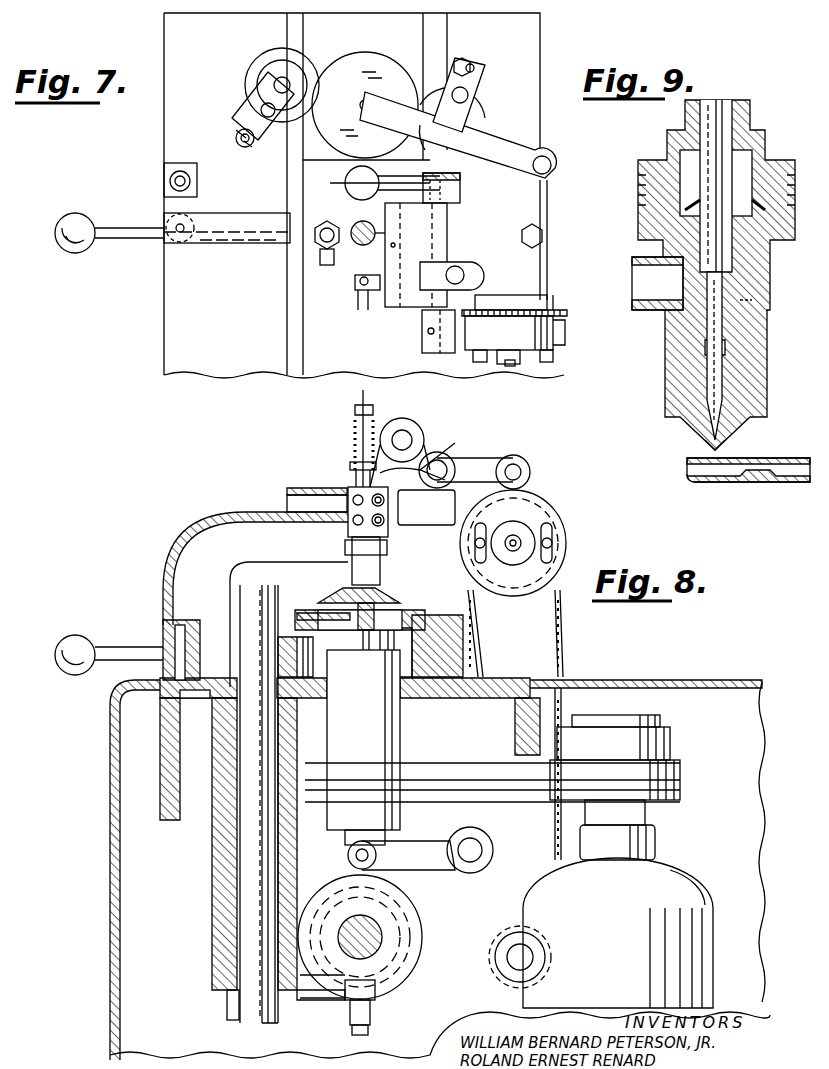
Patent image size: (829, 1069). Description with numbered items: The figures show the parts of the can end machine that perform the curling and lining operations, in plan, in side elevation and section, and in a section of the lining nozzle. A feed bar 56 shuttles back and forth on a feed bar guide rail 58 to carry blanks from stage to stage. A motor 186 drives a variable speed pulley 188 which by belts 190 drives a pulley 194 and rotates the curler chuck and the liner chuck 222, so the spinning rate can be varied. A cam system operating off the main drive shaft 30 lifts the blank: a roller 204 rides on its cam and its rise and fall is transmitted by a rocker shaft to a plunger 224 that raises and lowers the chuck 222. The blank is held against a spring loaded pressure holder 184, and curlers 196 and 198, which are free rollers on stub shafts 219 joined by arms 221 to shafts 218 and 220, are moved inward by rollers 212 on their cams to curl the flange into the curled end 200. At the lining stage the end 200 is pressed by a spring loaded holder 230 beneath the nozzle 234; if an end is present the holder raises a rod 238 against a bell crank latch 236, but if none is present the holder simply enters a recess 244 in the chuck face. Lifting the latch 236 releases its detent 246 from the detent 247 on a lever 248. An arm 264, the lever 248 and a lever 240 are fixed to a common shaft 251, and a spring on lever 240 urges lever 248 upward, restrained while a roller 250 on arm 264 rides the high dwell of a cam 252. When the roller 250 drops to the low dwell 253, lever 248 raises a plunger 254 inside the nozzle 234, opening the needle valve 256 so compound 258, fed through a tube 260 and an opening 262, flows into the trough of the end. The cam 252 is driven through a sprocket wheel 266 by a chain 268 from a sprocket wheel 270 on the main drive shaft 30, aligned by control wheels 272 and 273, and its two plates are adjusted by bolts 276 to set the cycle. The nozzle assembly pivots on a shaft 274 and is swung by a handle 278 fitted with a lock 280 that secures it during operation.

In FIG. 8, the main drive shaft 30 is at (359, 917).
In FIG. 8, the feed bar 56 is at (370, 646).
In FIG. 8, the feed bar guide rail 58 is at (354, 652).
In FIG. 7, the spring loaded pressure holder 184 is at (370, 60).
In FIG. 8, the motor 186 is at (700, 892).
In FIG. 8, the variable speed pulley 188 is at (659, 780).
In FIG. 8, the belts 190 is at (640, 772).
In FIG. 8, the pulley 194 is at (318, 765).
In FIG. 7, the curler 196 is at (274, 66).
In FIG. 7, the curler 198 is at (475, 117).
In FIG. 9, the curled end 200 is at (722, 485).
In FIG. 8, the roller 204 is at (348, 858).
In FIG. 8, the rollers 212 is at (372, 1012).
In FIG. 7, the shaft 218 is at (238, 136).
In FIG. 8, the shaft 218 is at (235, 873).
In FIG. 7, the stub shafts 219 is at (288, 80).
In FIG. 7, the shaft 220 is at (478, 60).
In FIG. 7, the arms 221 is at (262, 100).
In FIG. 8, the liner chuck 222 is at (308, 612).
In FIG. 8, the plunger 224 is at (348, 816).
In FIG. 8, the spring loaded pressure holder 230 is at (345, 595).
In FIG. 8, the nozzle 234 is at (380, 592).
In FIG. 9, the nozzle 234 is at (752, 112).
In FIG. 7, the bell crank latch 236 is at (355, 224).
In FIG. 8, the bell crank latch 236 is at (395, 420).
In FIG. 7, the rod 238 is at (355, 232).
In FIG. 8, the rod 238 is at (370, 480).
In FIG. 7, the lever 240 is at (352, 178).
In FIG. 8, the recess 244 is at (402, 612).
In FIG. 8, the detent 246 is at (440, 455).
In FIG. 8, the detent 247 is at (395, 495).
In FIG. 7, the lever 248 is at (360, 302).
In FIG. 8, the lever 248 is at (350, 466).
In FIG. 8, the roller 250 is at (530, 468).
In FIG. 7, the common shaft 251 is at (447, 244).
In FIG. 8, the common shaft 251 is at (445, 462).
In FIG. 7, the cam 252 is at (565, 340).
In FIG. 8, the cam 252 is at (545, 515).
In FIG. 8, the low dwell 253 is at (504, 590).
In FIG. 7, the plunger 254 is at (355, 286).
In FIG. 8, the plunger 254 is at (355, 446).
In FIG. 9, the plunger 254 is at (722, 385).
In FIG. 9, the needle valve 256 is at (705, 440).
In FIG. 9, the compound 258 is at (741, 292).
In FIG. 9, the tube 260 is at (655, 300).
In FIG. 9, the opening 262 is at (677, 290).
In FIG. 7, the arm 264 is at (441, 356).
In FIG. 8, the arm 264 is at (490, 460).
In FIG. 7, the sprocket wheel 266 is at (567, 312).
In FIG. 8, the sprocket wheel 266 is at (556, 527).
In FIG. 8, the chain 268 is at (563, 648).
In FIG. 8, the sprocket wheel 270 is at (380, 998).
In FIG. 8, the control wheel 272 is at (482, 850).
In FIG. 8, the control wheel 273 is at (533, 957).
In FIG. 7, the shaft 274 is at (512, 366).
In FIG. 8, the shaft 274 is at (515, 552).
In FIG. 7, the bolts 276 is at (553, 360).
In FIG. 8, the bolts 276 is at (472, 544).
In FIG. 7, the handle 278 is at (90, 218).
In FIG. 8, the handle 278 is at (75, 636).
In FIG. 7, the lock 280 is at (164, 207).